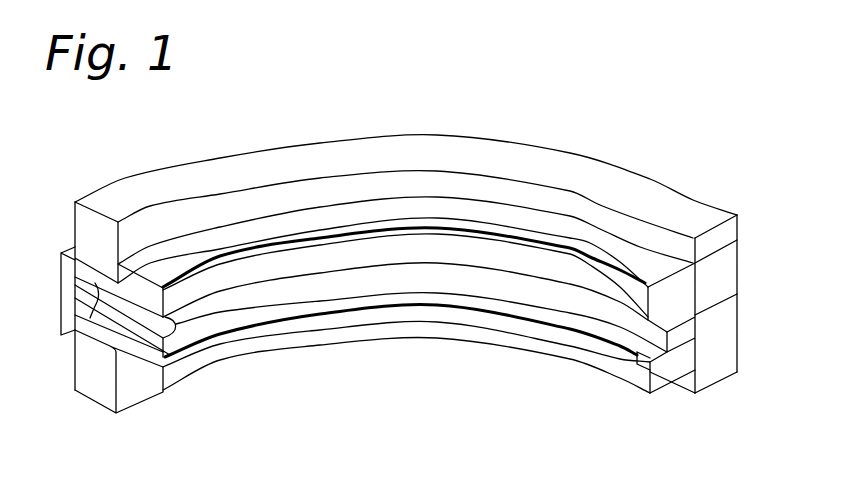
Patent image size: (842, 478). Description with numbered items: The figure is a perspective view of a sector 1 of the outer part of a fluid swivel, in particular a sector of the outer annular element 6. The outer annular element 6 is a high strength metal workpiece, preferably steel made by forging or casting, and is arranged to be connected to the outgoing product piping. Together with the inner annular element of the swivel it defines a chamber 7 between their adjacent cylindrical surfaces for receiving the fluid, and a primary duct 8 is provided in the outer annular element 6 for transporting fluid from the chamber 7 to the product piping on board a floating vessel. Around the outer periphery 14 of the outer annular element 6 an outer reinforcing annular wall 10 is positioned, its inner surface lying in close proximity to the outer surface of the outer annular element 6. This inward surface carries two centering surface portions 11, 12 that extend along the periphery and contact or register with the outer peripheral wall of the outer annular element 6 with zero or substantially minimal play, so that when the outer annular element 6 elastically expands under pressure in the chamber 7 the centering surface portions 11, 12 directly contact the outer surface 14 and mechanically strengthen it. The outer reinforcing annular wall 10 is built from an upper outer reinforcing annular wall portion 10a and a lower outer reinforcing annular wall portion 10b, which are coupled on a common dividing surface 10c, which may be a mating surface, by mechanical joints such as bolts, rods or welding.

The segmented ring assembly 1 is at (606, 97).
The outer annular element 6 is at (657, 378).
The chamber 7 is at (193, 315).
The primary duct 8 is at (88, 292).
The outer reinforcing annular wall 10 is at (728, 274).
The upper outer reinforcing annular wall portion 10a is at (730, 237).
The lower outer reinforcing annular wall portion 10b is at (714, 345).
The common dividing surface 10c is at (716, 302).
The centering surface portion 11 is at (722, 238).
The centering surface portion 12 is at (700, 374).
The outer periphery 14 is at (697, 306).